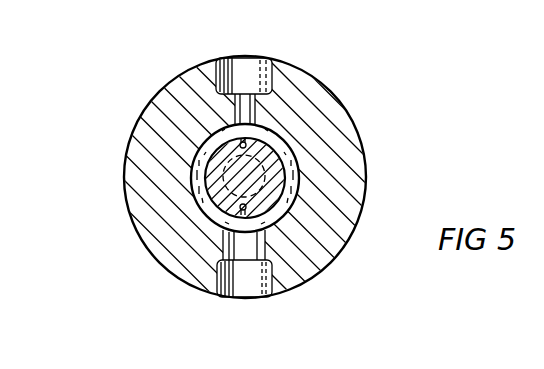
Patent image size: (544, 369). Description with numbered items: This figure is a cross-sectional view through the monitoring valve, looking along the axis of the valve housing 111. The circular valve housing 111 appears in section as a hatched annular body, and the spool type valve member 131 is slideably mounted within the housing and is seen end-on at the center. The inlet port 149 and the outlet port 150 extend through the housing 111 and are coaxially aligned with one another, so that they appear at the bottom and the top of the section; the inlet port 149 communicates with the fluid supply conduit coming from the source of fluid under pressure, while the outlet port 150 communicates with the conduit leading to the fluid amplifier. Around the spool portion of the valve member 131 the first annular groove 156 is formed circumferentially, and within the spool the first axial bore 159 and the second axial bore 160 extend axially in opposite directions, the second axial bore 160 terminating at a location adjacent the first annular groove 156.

The valve housing 111 is at (131, 128).
The spool type valve member 131 is at (218, 122).
The inlet port 149 is at (260, 240).
The outlet port 150 is at (252, 103).
The first annular groove 156 is at (297, 184).
The first axial bore 159 is at (246, 145).
The second axial bore 160 is at (240, 207).